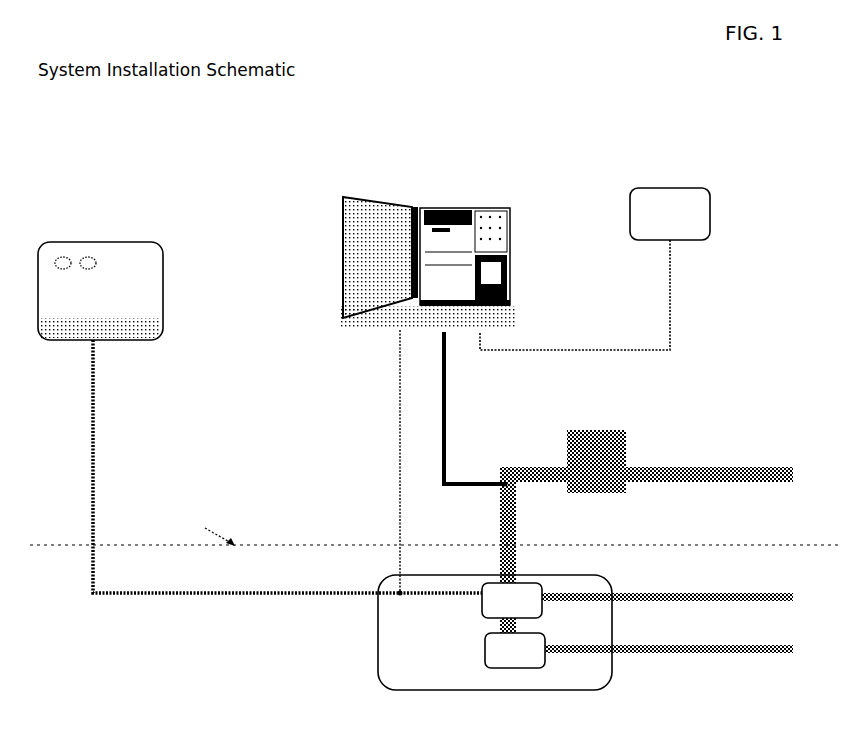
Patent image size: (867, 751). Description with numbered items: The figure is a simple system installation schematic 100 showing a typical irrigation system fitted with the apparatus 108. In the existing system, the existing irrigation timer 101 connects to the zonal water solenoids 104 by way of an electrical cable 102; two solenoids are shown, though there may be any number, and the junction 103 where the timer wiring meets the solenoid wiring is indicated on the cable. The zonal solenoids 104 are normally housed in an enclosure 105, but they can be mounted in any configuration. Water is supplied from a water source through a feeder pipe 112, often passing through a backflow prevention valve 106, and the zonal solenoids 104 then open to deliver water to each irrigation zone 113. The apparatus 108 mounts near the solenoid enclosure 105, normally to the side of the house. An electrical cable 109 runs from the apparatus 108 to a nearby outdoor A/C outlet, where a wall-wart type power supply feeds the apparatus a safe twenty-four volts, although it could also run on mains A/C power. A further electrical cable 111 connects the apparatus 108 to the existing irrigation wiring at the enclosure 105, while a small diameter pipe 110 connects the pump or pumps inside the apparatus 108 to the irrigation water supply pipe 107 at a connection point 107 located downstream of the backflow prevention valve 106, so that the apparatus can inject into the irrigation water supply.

The system installation 100 is at (435, 393).
The existing irrigation timer 101 is at (140, 343).
The electrical cable 102 is at (137, 587).
The wire junction 103 is at (402, 597).
The zonal solenoids 104 is at (481, 609).
The enclosure 105 is at (378, 644).
The backflow prevention valve 106 is at (567, 452).
The irrigation water supply pipe 107 is at (501, 483).
The apparatus 108 is at (455, 264).
The electrical cable 109 is at (685, 242).
The small diameter pipe 110 is at (446, 360).
The electrical cable 111 is at (398, 373).
The feeder pipe 112 is at (790, 466).
The irrigation zone 113 is at (786, 602).